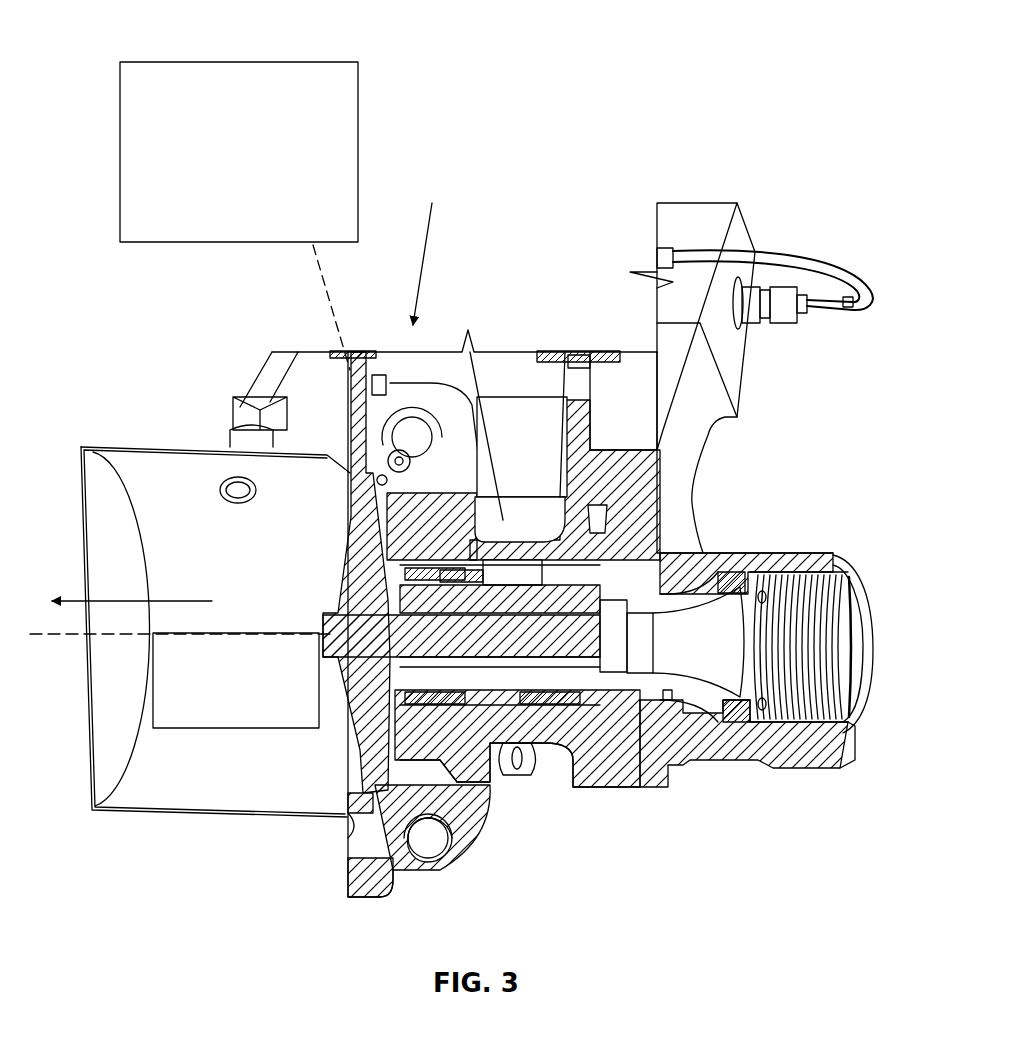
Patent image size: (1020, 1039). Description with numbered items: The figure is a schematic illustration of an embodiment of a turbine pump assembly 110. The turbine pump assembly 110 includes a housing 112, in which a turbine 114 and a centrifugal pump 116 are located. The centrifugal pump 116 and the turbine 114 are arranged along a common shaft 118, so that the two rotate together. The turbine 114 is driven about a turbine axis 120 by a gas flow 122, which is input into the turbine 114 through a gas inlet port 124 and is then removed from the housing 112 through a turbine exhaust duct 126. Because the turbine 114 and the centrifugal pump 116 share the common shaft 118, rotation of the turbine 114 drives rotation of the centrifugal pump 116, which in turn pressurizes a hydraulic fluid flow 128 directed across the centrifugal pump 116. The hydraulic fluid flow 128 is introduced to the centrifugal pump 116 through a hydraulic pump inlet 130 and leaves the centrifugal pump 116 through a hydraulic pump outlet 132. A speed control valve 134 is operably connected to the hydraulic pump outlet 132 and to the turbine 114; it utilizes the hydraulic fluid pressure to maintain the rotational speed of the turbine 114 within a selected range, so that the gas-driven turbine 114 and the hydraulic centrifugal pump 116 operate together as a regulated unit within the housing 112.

The turbine pump assembly 110 is at (300, 929).
The housing 112 is at (535, 755).
The turbine 114 is at (360, 577).
The centrifugal pump 116 is at (648, 641).
The common shaft 118 is at (517, 648).
The turbine axis 120 is at (230, 637).
The gas flow 122 is at (167, 600).
The gas inlet port 124 is at (428, 352).
The turbine exhaust duct 126 is at (92, 765).
The hydraulic fluid flow 128 is at (698, 187).
The hydraulic pump inlet 130 is at (850, 610).
The hydraulic pump outlet 132 is at (661, 249).
The speed control valve 134 is at (230, 75).